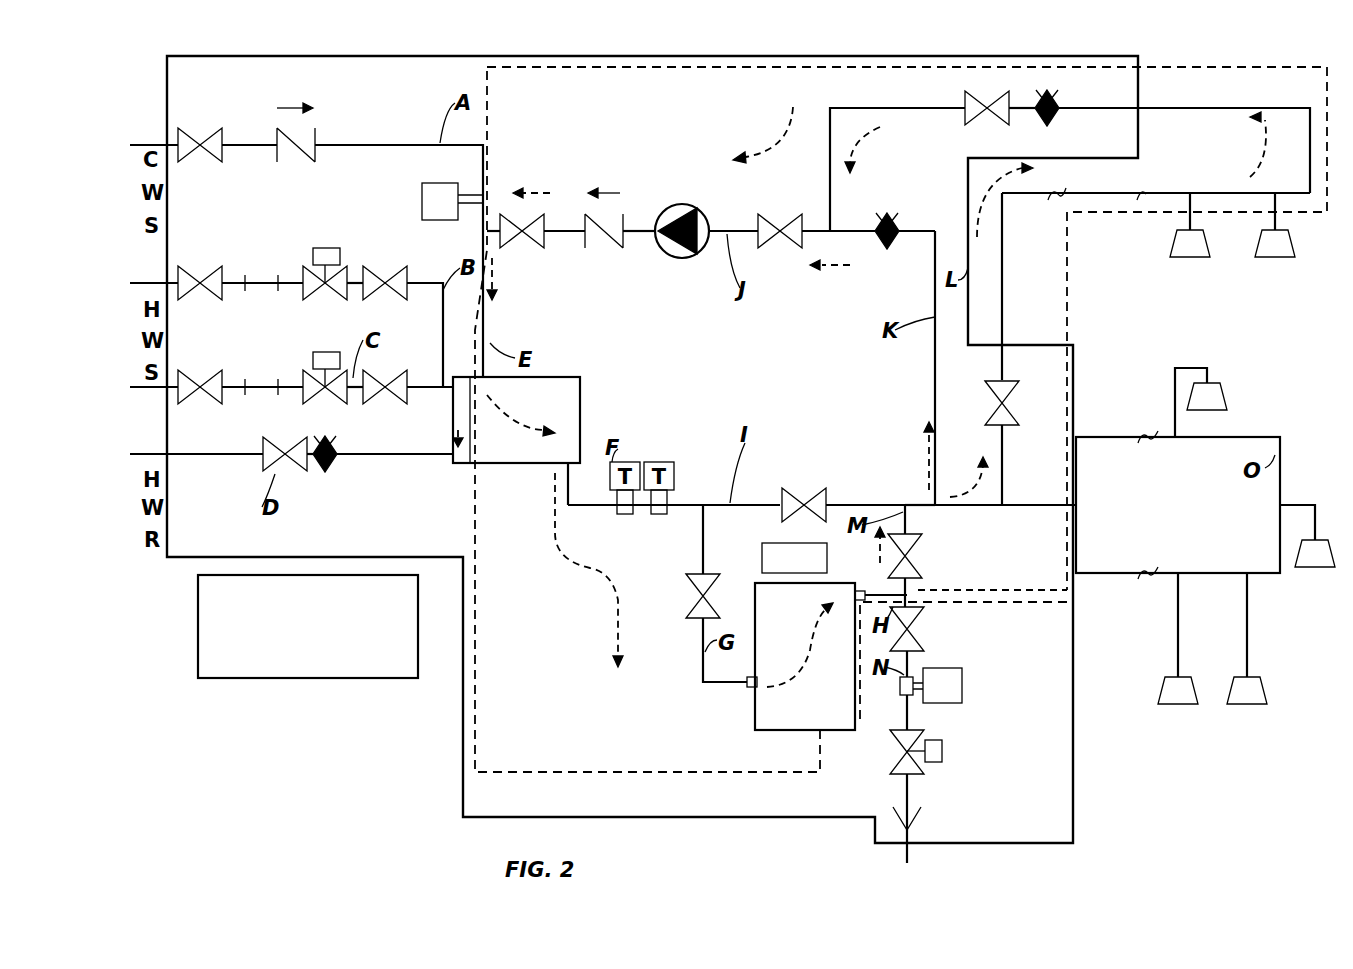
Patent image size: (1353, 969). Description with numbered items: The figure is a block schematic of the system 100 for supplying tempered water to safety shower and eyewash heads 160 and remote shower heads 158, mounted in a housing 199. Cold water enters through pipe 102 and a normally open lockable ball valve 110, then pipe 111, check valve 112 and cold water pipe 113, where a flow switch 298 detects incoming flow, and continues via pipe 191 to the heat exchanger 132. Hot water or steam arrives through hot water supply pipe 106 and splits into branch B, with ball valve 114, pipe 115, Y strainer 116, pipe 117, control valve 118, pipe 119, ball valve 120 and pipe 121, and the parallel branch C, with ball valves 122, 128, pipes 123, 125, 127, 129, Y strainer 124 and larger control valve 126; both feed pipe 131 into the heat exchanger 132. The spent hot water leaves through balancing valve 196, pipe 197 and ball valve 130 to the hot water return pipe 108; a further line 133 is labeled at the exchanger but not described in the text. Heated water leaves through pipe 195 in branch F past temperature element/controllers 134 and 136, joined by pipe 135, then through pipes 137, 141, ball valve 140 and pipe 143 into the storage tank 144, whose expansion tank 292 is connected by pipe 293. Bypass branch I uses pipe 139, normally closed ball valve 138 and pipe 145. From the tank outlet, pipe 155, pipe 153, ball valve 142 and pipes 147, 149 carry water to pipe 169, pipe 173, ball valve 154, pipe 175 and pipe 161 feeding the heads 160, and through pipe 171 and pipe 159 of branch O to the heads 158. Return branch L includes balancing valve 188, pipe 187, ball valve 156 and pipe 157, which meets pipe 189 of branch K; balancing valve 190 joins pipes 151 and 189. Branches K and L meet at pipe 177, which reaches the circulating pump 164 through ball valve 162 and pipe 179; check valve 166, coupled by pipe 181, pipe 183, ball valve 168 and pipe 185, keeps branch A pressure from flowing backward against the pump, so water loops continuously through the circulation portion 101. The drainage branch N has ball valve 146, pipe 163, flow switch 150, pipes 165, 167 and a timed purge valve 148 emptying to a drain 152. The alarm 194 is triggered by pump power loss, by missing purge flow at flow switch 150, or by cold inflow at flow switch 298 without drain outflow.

The system 100 is at (402, 740).
The circulation portion 101 is at (540, 775).
The pipe 102 is at (178, 160).
The hot water supply pipe 106 is at (168, 430).
The hot water return pipe 108 is at (172, 462).
The ball valve 110 is at (183, 125).
The pipe 111 is at (243, 147).
The check valve 112 is at (318, 125).
The cold water pipe 113 is at (383, 148).
The ball valve 114 is at (220, 268).
The pipe 115 is at (243, 278).
The Y strainer 116 is at (263, 295).
The pipe 117 is at (300, 292).
The control valve 118 is at (305, 265).
The pipe 119 is at (350, 275).
The ball valve 120 is at (410, 268).
The pipe 121 is at (443, 300).
The ball valve 122 is at (178, 372).
The pipe 123 is at (178, 404).
The Y strainer 124 is at (277, 393).
The pipe 125 is at (310, 404).
The control valve 126 is at (307, 370).
The pipe 127 is at (363, 404).
The ball valve 128 is at (370, 372).
The pipe 129 is at (365, 427).
The ball valve 130 is at (303, 474).
The pipe 131 is at (425, 428).
The heat exchanger 132 is at (585, 396).
The return pipe segment 133 is at (407, 460).
The temperature element/controller 134 is at (628, 462).
The pipe 135 is at (636, 508).
The second temperature element/controller 136 is at (650, 510).
The pipe 137 is at (680, 503).
The ball valve 138 is at (793, 507).
The pipe 139 is at (785, 490).
The ball valve 140 is at (688, 585).
The pipe 141 is at (702, 566).
The ball valve 142 is at (926, 558).
The pipe 143 is at (700, 660).
The storage tank 144 is at (815, 732).
The pipe 145 is at (868, 503).
The ball valve 146 is at (928, 642).
The pipe 147 is at (918, 530).
The purge valve 148 is at (943, 763).
The pipe 149 is at (915, 503).
The flow switch 150 is at (965, 705).
The pipe 151 is at (935, 410).
The drain 152 is at (910, 855).
The pipe 153 is at (922, 590).
The ball valve 154 is at (1002, 380).
The pipe 155 is at (880, 545).
The ball valve 156 is at (969, 122).
The pipe 157 is at (836, 207).
The shower heads 158 is at (1228, 403).
The pipe 159 is at (1080, 525).
The SS/EW heads 160 is at (1180, 258).
The pipe 161 is at (1140, 193).
The ball valve 162 is at (790, 250).
The pipe 163 is at (912, 657).
The circulating pump 164 is at (678, 258).
The pipe 165 is at (900, 710).
The check valve 166 is at (604, 250).
The pipe 167 is at (905, 780).
The ball valve 168 is at (525, 250).
The pipe 169 is at (977, 508).
The pipe 171 is at (1008, 503).
The pipe 173 is at (1003, 470).
The pipe 175 is at (1006, 258).
The pipe 177 is at (790, 200).
The pipe 179 is at (750, 228).
The pipe 181 is at (640, 228).
The pipe 183 is at (565, 233).
The pipe 185 is at (489, 228).
The pipe 187 is at (1033, 112).
The balancing valve 188 is at (1062, 115).
The pipe 189 is at (858, 240).
The balancing valve 190 is at (898, 222).
The pipe 191 is at (490, 318).
The alarm 194 is at (308, 626).
The pipe 195 is at (583, 503).
The balancing valve 196 is at (340, 462).
The pipe 197 is at (325, 474).
The housing 199 is at (485, 818).
The expansion tank 292 is at (794, 558).
The pipe 293 is at (703, 548).
The flow switch 298 is at (420, 200).